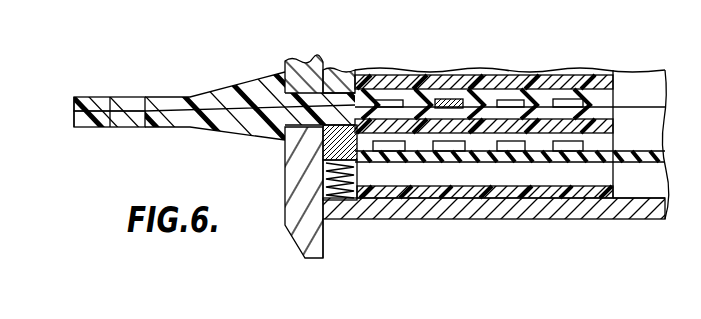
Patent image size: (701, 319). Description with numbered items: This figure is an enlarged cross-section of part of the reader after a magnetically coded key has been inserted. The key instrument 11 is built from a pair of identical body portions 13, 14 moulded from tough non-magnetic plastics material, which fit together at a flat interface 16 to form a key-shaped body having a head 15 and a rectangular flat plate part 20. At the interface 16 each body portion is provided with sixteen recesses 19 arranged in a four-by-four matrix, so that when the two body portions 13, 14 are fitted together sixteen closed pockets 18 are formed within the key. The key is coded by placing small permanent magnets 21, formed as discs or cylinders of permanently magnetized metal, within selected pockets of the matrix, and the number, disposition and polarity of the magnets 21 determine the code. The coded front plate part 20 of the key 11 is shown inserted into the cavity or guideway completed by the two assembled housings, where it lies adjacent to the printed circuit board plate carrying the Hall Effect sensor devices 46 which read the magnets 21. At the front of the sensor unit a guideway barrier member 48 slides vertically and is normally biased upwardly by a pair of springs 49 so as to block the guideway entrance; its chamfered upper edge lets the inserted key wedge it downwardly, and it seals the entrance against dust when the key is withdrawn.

The instrument 11 is at (161, 87).
The body portion 13 is at (94, 103).
The body portion 14 is at (102, 118).
The head 15 is at (203, 98).
The flat interface 16 is at (76, 111).
The closed pockets 18 is at (389, 100).
The recesses 19 is at (555, 99).
The rectangular flat plate part 20 is at (479, 96).
The permanent magnets 21 is at (446, 99).
The Hall Effect sensor devices 46 is at (573, 150).
The guideway barrier member 48 is at (323, 150).
The springs 49 is at (323, 178).